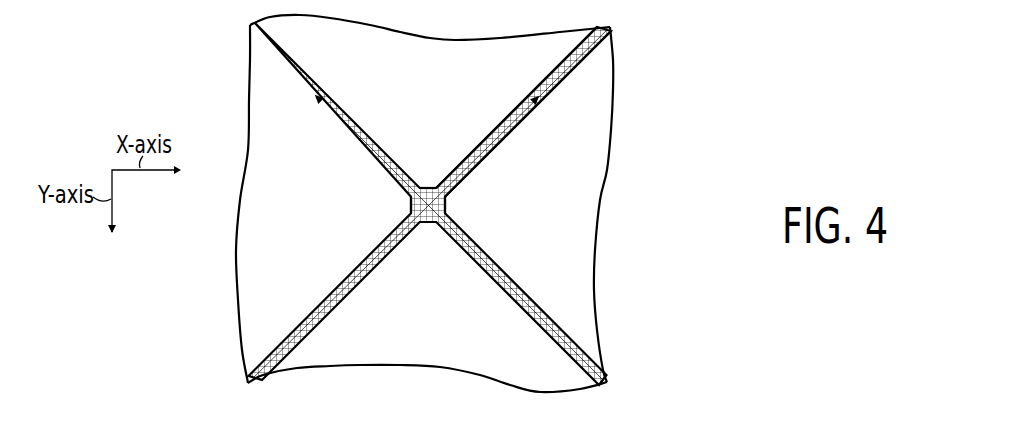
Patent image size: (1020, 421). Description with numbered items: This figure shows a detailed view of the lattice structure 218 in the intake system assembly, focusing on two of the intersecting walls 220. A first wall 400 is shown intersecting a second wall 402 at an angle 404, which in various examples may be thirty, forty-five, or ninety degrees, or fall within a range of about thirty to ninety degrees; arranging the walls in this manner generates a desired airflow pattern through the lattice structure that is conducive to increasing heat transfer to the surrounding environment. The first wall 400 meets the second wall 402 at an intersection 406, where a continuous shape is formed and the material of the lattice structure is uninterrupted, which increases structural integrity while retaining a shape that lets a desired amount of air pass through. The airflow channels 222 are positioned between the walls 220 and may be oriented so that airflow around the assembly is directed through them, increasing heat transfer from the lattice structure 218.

The lattice structure 218 is at (572, 146).
The intersecting walls 220 is at (512, 186).
The airflow channels 222 is at (445, 92).
The first wall 400 is at (290, 51).
The second wall 402 is at (556, 64).
The angle 404 is at (448, 173).
The intersection 406 is at (429, 232).